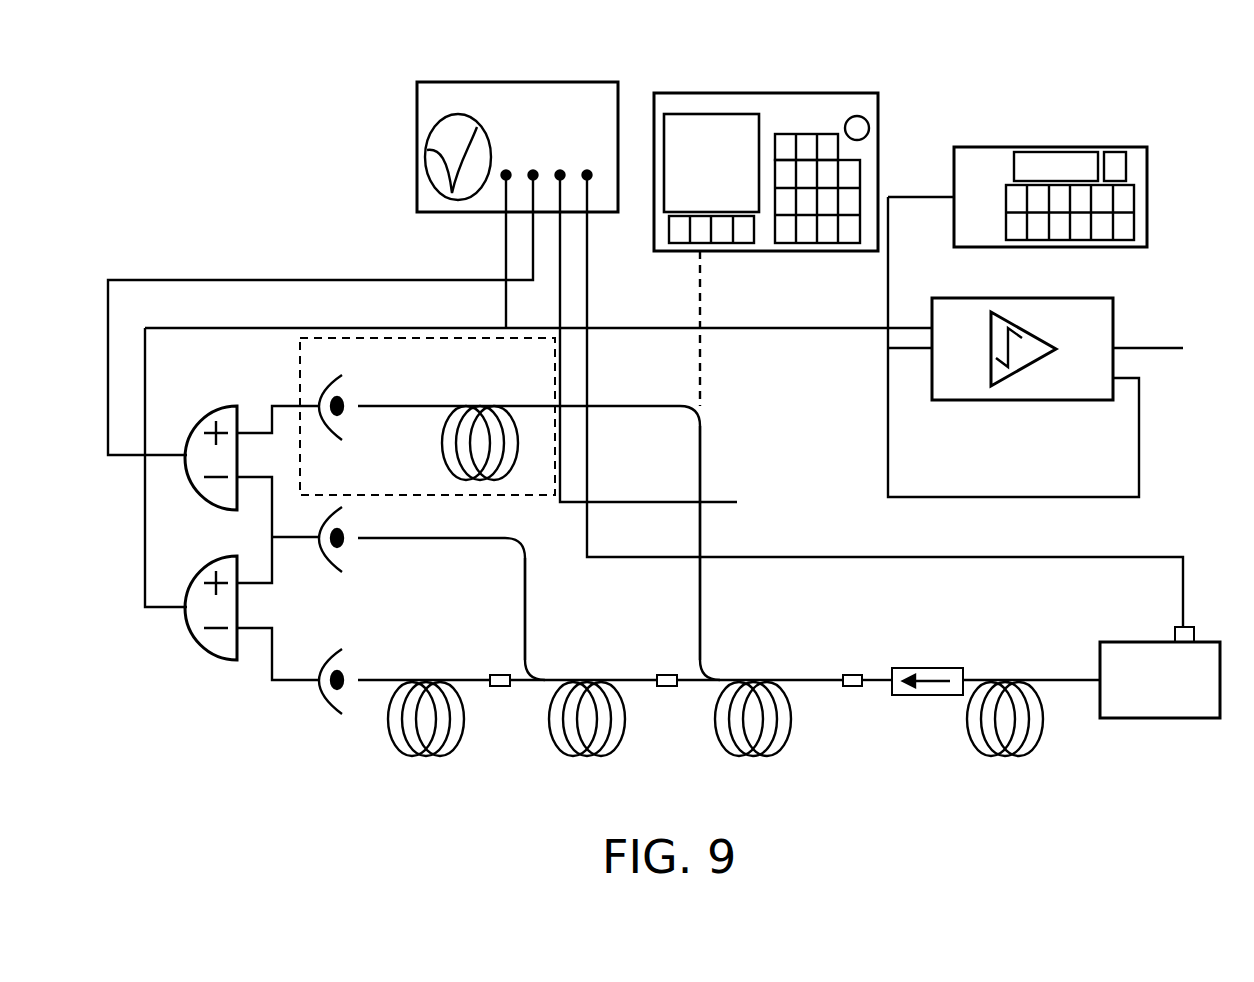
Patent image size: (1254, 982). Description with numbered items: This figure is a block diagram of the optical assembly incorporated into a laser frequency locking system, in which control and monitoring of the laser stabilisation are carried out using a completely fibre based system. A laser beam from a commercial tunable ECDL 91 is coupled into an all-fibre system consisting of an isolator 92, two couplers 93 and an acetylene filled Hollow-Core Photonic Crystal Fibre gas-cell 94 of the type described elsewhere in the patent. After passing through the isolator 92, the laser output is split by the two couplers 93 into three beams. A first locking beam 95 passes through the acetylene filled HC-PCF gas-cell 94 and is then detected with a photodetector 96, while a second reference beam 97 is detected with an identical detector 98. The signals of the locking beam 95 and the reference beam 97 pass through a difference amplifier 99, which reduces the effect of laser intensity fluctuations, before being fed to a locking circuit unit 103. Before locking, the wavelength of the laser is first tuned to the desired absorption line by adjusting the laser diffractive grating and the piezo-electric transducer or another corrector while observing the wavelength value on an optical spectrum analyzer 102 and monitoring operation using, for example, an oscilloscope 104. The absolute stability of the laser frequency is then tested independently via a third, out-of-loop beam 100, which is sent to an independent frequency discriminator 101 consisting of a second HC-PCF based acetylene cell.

The tunable ECDL 91 is at (1160, 672).
The isolator 92 is at (990, 758).
The couplers 93 is at (727, 755).
The acetylene filled Hollow-Core Photonic Crystal Fibre gas-cell 94 is at (415, 758).
The first locking beam 95 is at (478, 676).
The photodetector 96 is at (338, 715).
The second reference beam 97 is at (525, 590).
The detector 98 is at (338, 573).
The difference amplifier 99 is at (187, 597).
The third out-of-loop beam 100 is at (700, 470).
The independent frequency discriminator 101 is at (480, 406).
The optical spectrum analyzer 102 is at (738, 93).
The locking circuit unit 103 is at (1113, 307).
The oscilloscope 104 is at (470, 82).